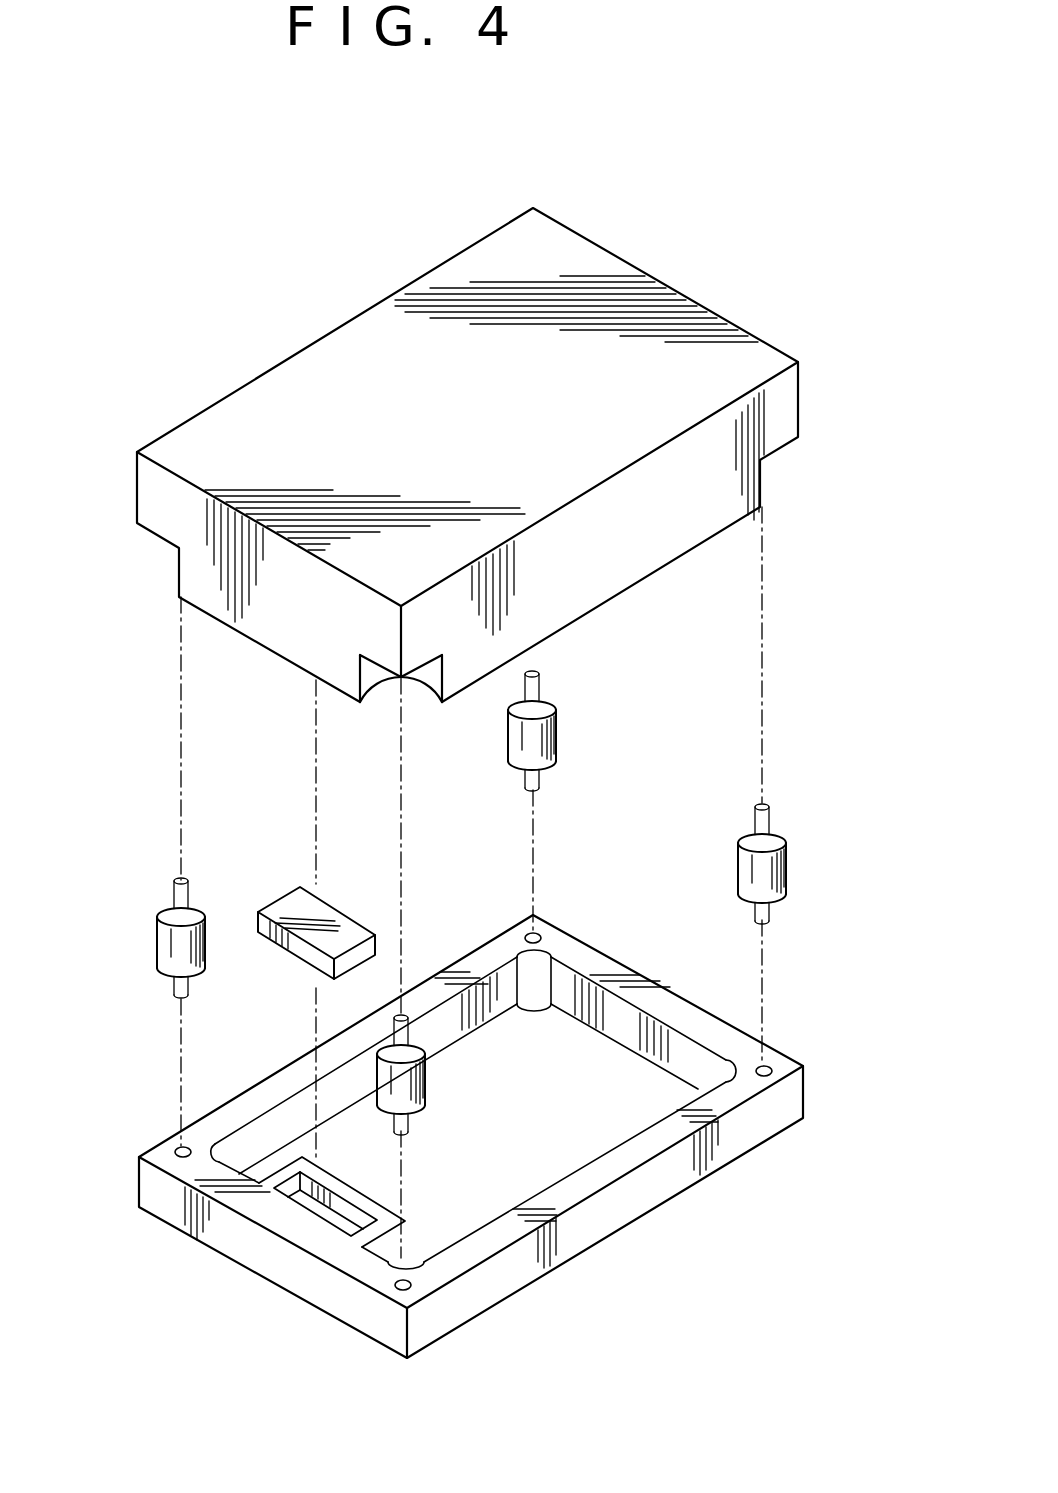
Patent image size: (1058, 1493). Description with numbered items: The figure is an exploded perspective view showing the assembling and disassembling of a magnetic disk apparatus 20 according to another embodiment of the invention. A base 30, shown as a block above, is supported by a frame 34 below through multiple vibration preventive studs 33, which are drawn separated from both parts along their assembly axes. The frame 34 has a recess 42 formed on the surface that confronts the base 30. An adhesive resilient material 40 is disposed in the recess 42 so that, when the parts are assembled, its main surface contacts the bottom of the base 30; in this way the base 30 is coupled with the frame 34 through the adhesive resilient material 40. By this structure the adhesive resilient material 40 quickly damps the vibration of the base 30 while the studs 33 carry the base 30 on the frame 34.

The magnetic disk apparatus 20 is at (898, 212).
The base 30 is at (740, 337).
The vibration preventive stud 33 is at (557, 741).
The frame 34 is at (471, 1136).
The adhesive resilient material 40 is at (293, 902).
The recess 42 is at (315, 1206).